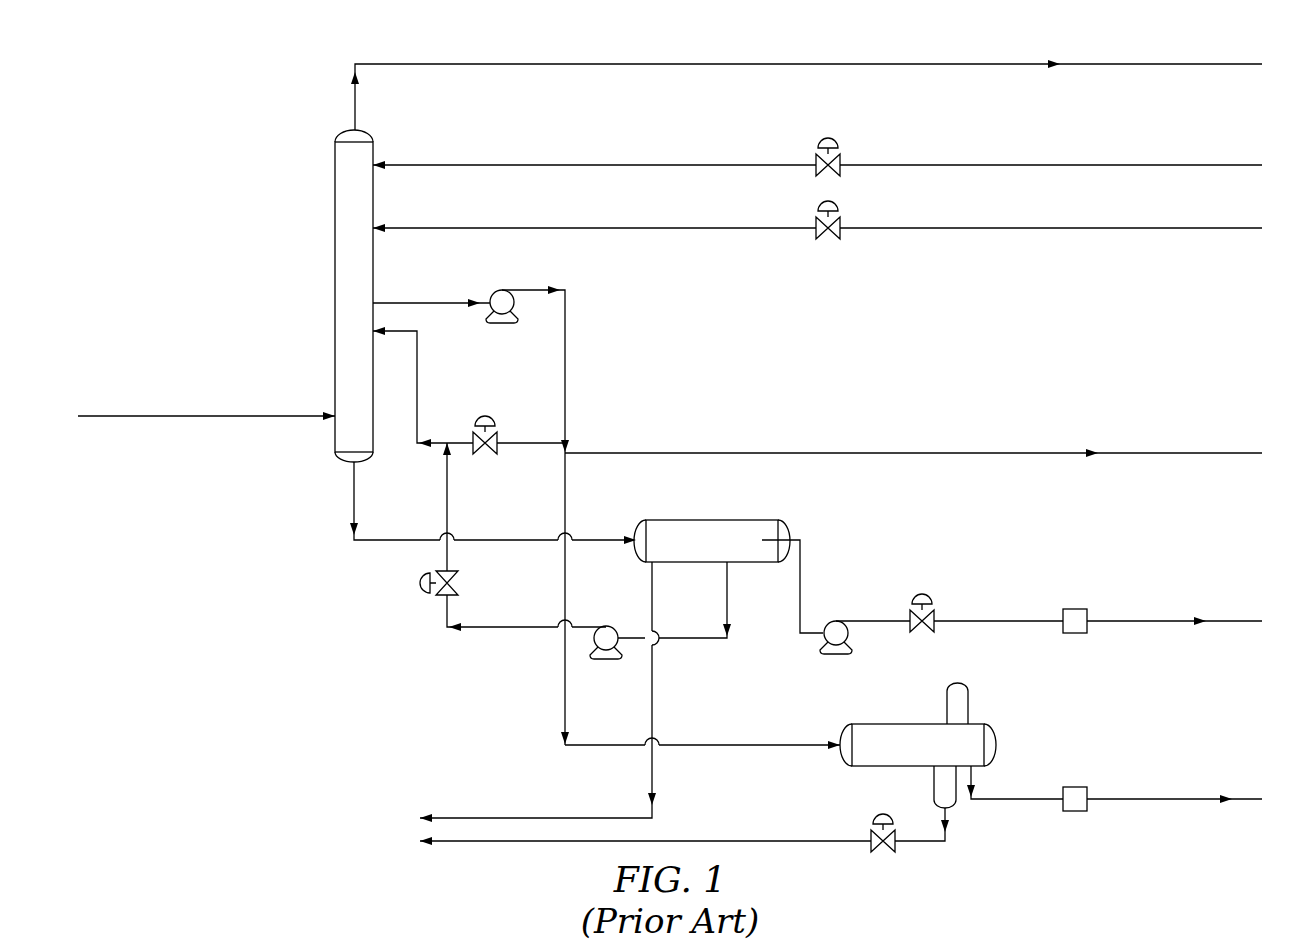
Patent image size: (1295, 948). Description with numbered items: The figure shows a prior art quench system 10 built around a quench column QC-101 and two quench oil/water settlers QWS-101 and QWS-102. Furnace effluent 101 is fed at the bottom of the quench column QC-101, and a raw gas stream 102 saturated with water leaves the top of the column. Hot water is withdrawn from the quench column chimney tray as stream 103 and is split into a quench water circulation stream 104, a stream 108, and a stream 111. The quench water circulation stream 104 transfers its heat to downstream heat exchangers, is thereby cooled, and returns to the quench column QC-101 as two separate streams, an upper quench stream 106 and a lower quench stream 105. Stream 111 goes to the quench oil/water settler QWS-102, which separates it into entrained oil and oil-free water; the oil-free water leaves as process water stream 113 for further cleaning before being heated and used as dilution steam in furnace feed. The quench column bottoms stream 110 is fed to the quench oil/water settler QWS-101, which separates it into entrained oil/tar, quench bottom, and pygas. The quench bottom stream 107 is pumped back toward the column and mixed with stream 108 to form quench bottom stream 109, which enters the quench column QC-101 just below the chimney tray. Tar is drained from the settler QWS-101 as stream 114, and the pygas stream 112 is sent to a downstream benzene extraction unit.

The prior art quench system 10 is at (200, 32).
The furnace effluent 101 is at (183, 416).
The raw gas stream 102 is at (935, 64).
The hot water stream 103 is at (566, 312).
The quench water circulation stream 104 is at (935, 453).
The lower quench stream 105 is at (1100, 228).
The upper quench stream 106 is at (1018, 165).
The quench bottom stream 107 is at (510, 625).
The stream 108 is at (526, 447).
The quench bottom stream 109 is at (418, 374).
The quench column bottoms stream 110 is at (354, 488).
The stream 111 is at (567, 500).
The pygas stream 112 is at (1098, 621).
The process water stream 113 is at (1098, 799).
The tar stream 114 is at (655, 705).
The quench column QC-101 is at (335, 176).
The quench oil/water settler QWS-101 is at (735, 520).
The quench oil/water settler QWS-102 is at (905, 724).